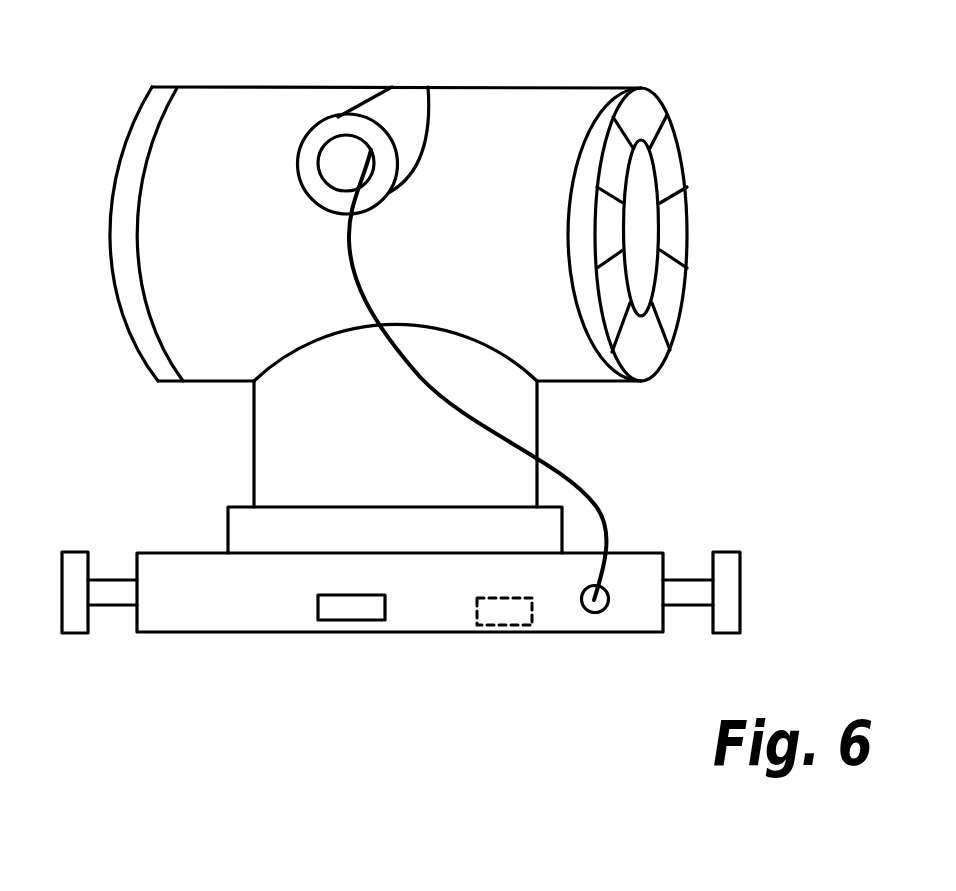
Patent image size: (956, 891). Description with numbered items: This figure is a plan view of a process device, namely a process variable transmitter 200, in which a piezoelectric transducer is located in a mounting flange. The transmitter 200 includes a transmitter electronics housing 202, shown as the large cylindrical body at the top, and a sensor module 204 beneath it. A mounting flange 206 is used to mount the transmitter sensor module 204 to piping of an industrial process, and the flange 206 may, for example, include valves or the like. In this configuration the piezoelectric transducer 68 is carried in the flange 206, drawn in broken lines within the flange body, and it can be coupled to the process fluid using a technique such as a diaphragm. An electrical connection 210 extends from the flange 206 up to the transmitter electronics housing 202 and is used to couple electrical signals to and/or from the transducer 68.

The transmitter 200 is at (708, 381).
The transmitter electronics housing 202 is at (527, 86).
The sensor module 204 is at (567, 530).
The mounting flange 206 is at (163, 567).
The electrical connection 210 is at (563, 458).
The piezoelectric transducer 68 is at (503, 633).